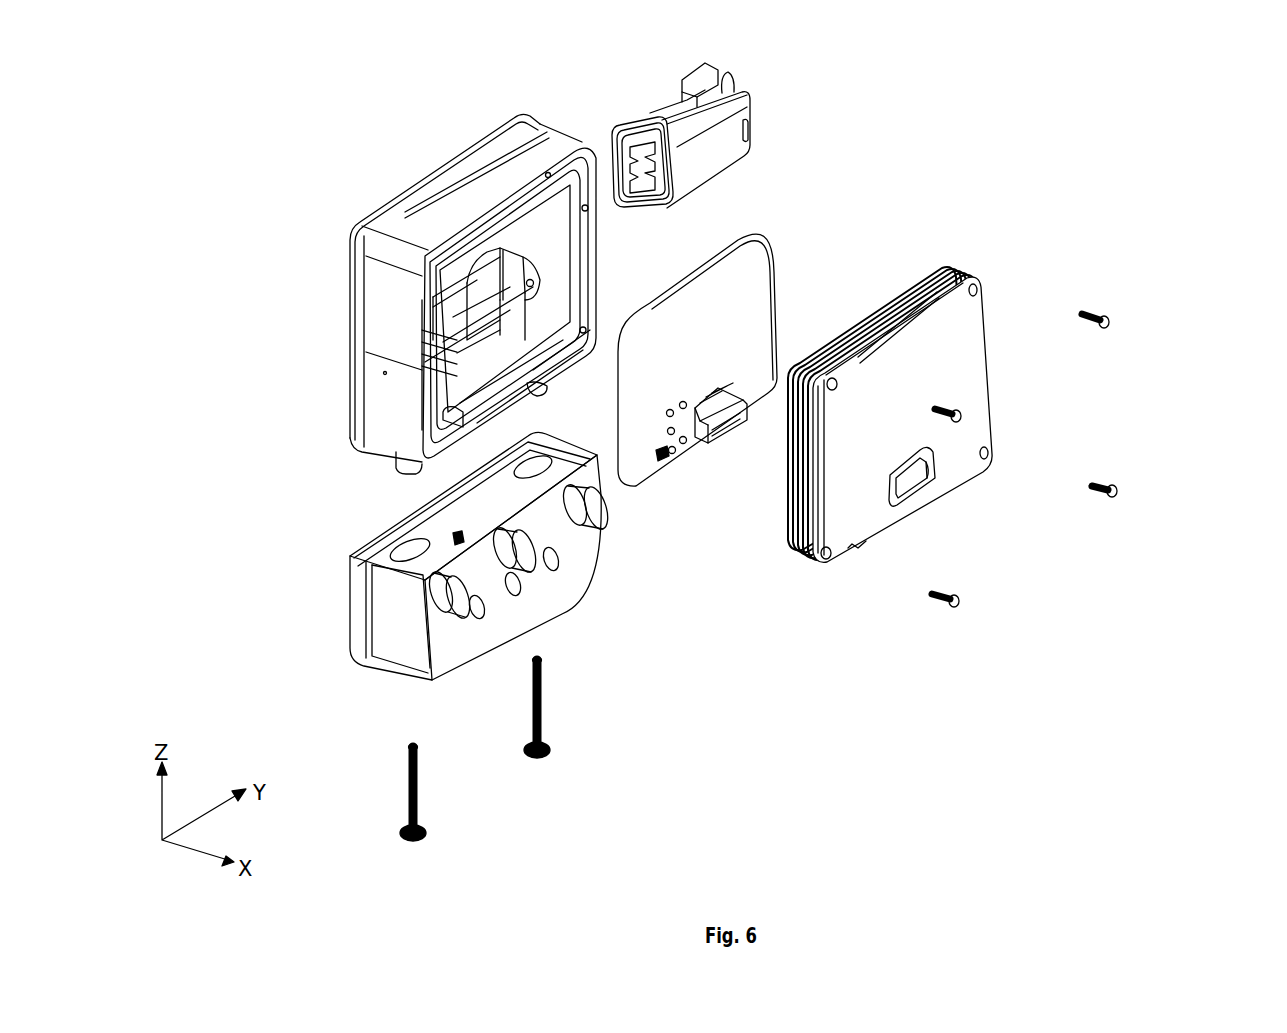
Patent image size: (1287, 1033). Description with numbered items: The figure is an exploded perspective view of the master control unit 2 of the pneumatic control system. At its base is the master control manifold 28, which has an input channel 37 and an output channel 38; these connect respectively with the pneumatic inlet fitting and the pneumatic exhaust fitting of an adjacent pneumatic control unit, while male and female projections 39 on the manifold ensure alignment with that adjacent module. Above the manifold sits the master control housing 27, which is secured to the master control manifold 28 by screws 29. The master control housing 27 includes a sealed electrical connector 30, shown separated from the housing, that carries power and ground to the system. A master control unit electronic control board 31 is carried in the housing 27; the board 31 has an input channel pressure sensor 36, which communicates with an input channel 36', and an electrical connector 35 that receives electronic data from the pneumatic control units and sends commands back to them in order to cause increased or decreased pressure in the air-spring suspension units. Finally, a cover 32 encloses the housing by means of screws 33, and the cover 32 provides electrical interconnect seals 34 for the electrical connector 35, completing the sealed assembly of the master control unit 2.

The master control unit 2 is at (428, 102).
The master control housing 27 is at (383, 300).
The master control manifold 28 is at (387, 600).
The screws 29 is at (397, 783).
The sealed electrical connector 30 is at (713, 117).
The master control unit electronic control board 31 is at (765, 347).
The cover 32 is at (967, 333).
The screws 33 is at (960, 594).
The electrical interconnect seals 34 is at (898, 507).
The electrical connector 35 is at (726, 430).
The input channel pressure sensor 36 is at (788, 276).
The input channel 36' is at (539, 615).
The input channel 37 is at (480, 610).
The output channel 38 is at (552, 562).
The male and female projections 39 is at (450, 594).